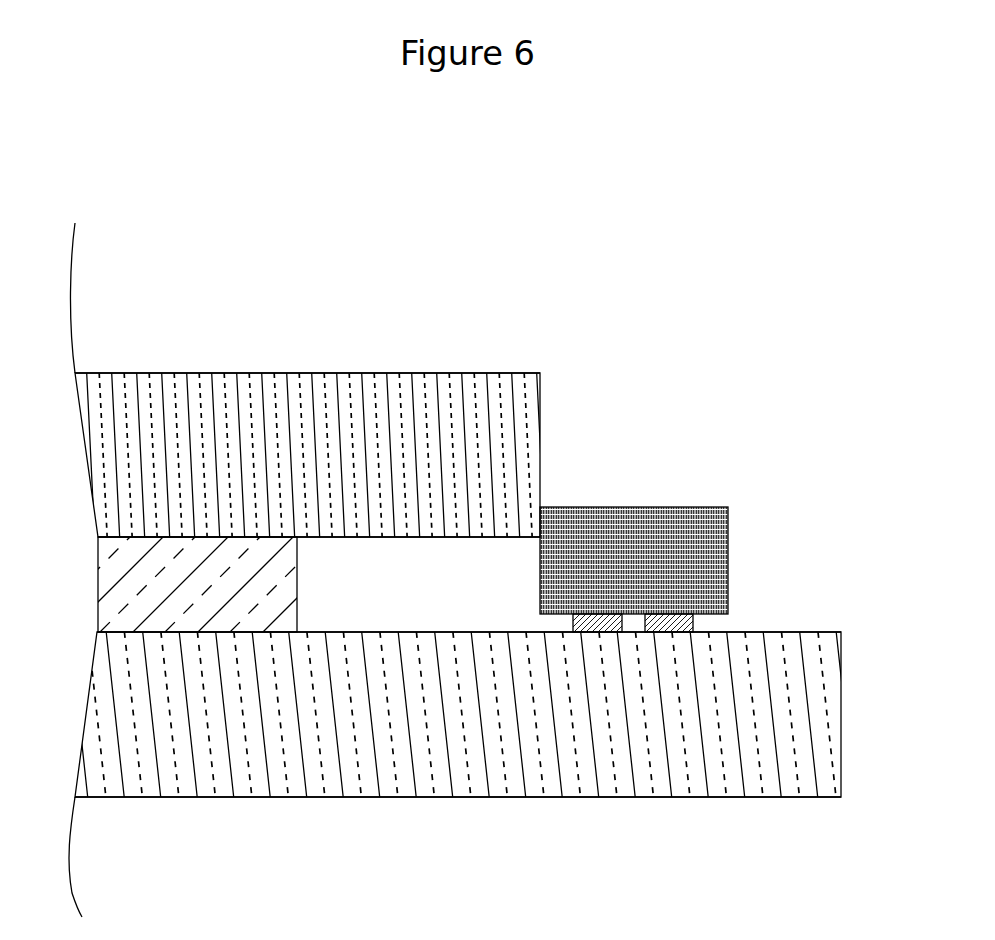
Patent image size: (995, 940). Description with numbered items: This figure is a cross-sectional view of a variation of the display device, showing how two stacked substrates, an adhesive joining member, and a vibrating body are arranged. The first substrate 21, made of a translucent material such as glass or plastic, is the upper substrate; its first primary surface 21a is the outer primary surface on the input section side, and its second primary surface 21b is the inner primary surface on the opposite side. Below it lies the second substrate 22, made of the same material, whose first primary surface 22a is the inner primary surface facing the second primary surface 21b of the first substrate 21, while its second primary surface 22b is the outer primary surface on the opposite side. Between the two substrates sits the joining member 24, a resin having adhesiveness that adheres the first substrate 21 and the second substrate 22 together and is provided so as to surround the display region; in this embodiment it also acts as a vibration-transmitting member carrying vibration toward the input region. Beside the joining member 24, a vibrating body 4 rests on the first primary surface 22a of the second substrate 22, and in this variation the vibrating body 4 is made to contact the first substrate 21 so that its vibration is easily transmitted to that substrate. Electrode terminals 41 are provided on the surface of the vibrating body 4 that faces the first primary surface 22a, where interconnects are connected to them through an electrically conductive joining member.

The first substrate 21 is at (428, 403).
The first primary surface 21a is at (255, 373).
The second primary surface 21b is at (195, 548).
The joining member 24 is at (253, 590).
The second substrate 22 is at (493, 773).
The first primary surface 22a is at (420, 632).
The second primary surface 22b is at (620, 798).
The vibrating body 4 is at (615, 535).
The electrode terminal 41 is at (673, 628).